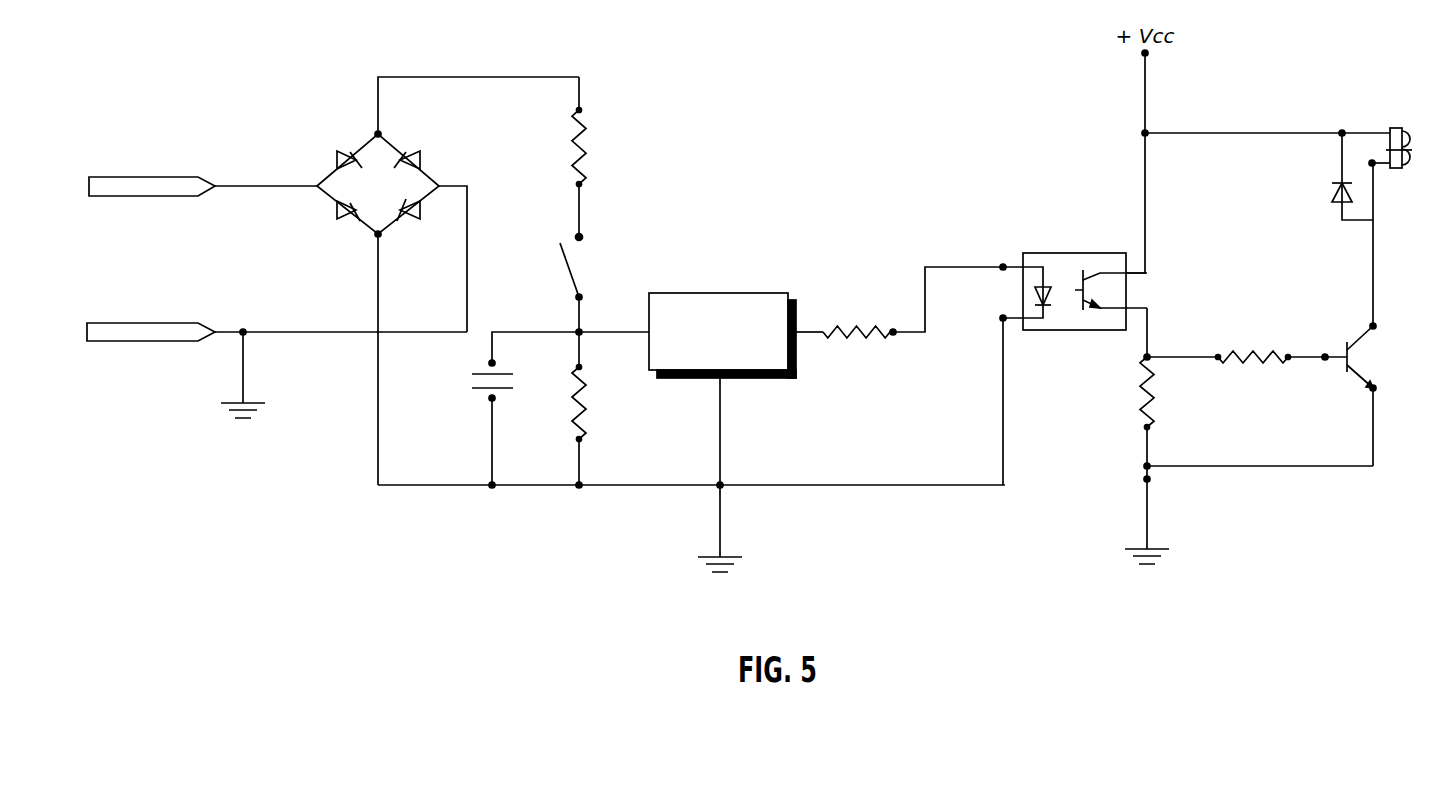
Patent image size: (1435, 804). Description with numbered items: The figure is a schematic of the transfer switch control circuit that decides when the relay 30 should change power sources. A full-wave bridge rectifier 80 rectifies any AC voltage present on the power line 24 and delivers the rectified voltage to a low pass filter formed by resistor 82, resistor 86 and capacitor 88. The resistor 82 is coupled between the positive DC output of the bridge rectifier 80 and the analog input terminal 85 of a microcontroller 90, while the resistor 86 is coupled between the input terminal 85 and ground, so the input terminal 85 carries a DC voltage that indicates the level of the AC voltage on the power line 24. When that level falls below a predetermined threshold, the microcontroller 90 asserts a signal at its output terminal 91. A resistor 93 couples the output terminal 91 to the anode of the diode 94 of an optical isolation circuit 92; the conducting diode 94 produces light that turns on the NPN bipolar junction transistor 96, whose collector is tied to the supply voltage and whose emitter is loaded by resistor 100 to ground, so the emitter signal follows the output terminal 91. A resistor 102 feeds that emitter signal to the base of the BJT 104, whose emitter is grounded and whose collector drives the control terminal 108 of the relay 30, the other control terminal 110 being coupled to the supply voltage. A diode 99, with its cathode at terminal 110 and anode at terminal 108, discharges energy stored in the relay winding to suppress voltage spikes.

The power line 24 is at (203, 171).
The relay 30 is at (1399, 150).
The full-wave bridge rectifier 80 is at (377, 173).
The resistor 82 is at (602, 157).
The analog input terminal 85 is at (591, 301).
The resistor 86 is at (603, 427).
The capacitor 88 is at (539, 410).
The microcontroller 90 is at (722, 415).
The output terminal 91 is at (825, 351).
The optical isolation circuit 92 is at (1019, 355).
The resistor 93 is at (923, 301).
The diode 94 is at (1067, 355).
The NPN bipolar junction transistor 96 is at (1107, 267).
The diode 99 is at (1339, 176).
The resistor 100 is at (1167, 460).
The resistor 102 is at (1247, 337).
The BJT 104 is at (1335, 314).
The control terminal 108 is at (1399, 169).
The control terminal 110 is at (1267, 113).